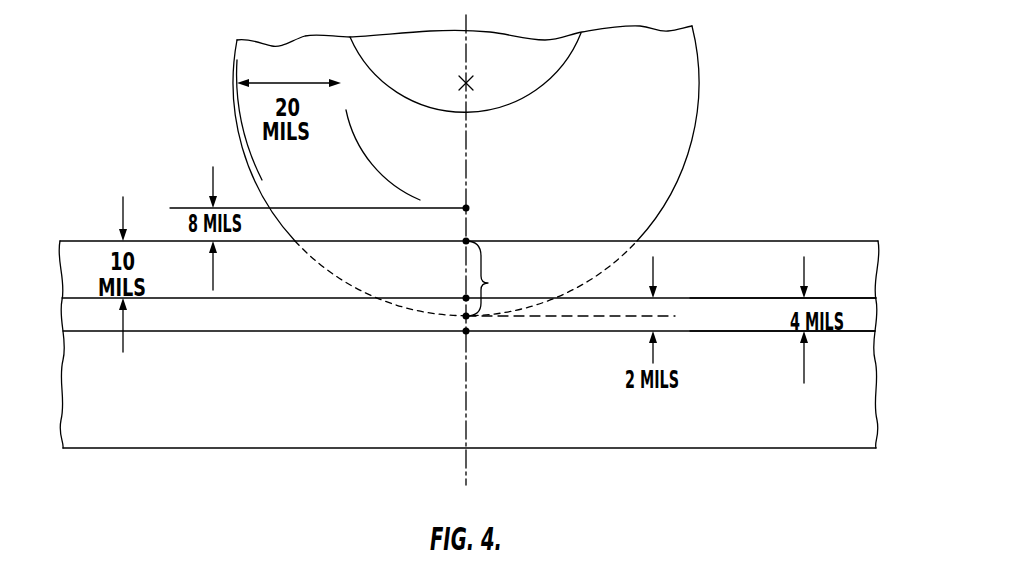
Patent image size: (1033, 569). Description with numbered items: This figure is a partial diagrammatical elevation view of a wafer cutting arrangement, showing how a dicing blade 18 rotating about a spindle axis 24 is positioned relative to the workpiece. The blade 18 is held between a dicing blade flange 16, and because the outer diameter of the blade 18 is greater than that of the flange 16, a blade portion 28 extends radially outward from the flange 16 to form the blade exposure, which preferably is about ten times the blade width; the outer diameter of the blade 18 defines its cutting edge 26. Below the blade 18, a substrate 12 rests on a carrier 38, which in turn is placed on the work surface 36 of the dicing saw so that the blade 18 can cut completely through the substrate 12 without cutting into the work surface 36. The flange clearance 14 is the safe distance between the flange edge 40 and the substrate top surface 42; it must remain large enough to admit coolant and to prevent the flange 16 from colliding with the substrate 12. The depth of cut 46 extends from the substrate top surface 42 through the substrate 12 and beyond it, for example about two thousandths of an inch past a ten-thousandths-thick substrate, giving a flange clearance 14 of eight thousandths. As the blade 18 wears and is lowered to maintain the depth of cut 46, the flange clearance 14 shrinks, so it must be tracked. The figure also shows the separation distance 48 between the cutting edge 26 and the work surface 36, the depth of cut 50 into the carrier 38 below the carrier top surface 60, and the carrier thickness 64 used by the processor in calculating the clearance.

The substrate 12 is at (865, 270).
The flange clearance 14 is at (466, 208).
The dicing blade flange 16 is at (588, 86).
The dicing blade 18 is at (678, 76).
The spindle axis 24 is at (474, 84).
The cutting edge 26 is at (245, 160).
The blade portion 28 is at (284, 83).
The work surface 36 is at (305, 331).
The carrier 38 is at (867, 325).
The flange edge 40 is at (368, 168).
The substrate top surface 42 is at (735, 241).
The depth of cut 46 is at (488, 283).
The separation distance 48 is at (462, 322).
The depth of cut into the carrier 50 is at (463, 308).
The carrier top surface 60 is at (717, 298).
The carrier thickness 64 is at (807, 366).